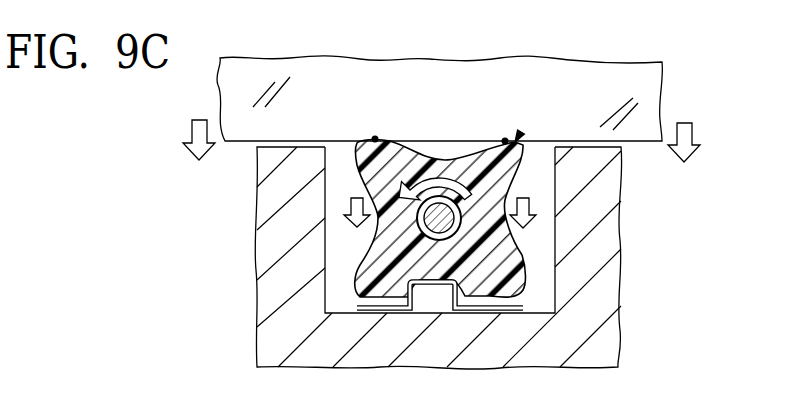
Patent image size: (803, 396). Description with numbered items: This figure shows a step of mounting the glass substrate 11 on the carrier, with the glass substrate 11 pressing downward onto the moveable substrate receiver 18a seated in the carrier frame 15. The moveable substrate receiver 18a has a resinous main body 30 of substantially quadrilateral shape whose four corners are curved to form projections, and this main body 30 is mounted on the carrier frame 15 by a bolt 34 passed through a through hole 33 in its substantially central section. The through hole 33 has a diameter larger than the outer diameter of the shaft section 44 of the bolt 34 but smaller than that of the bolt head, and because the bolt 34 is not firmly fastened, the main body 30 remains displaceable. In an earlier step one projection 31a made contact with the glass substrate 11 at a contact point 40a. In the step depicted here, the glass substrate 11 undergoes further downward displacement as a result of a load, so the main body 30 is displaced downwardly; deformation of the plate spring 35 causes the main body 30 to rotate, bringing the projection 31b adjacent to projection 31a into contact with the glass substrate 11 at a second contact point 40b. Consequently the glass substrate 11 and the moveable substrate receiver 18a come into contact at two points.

The glass substrate 11 is at (647, 85).
The carrier frame 15 is at (608, 242).
The moveable substrate receiver 18a is at (516, 140).
The main body 30 is at (355, 163).
The projection 31a is at (373, 137).
The projection 31b is at (623, 183).
The through hole 33 is at (447, 195).
The bolt 34 is at (376, 218).
The plate spring 35 is at (357, 304).
The contact point 40a is at (373, 137).
The contact point 40b is at (505, 140).
The shaft section 44 is at (334, 219).